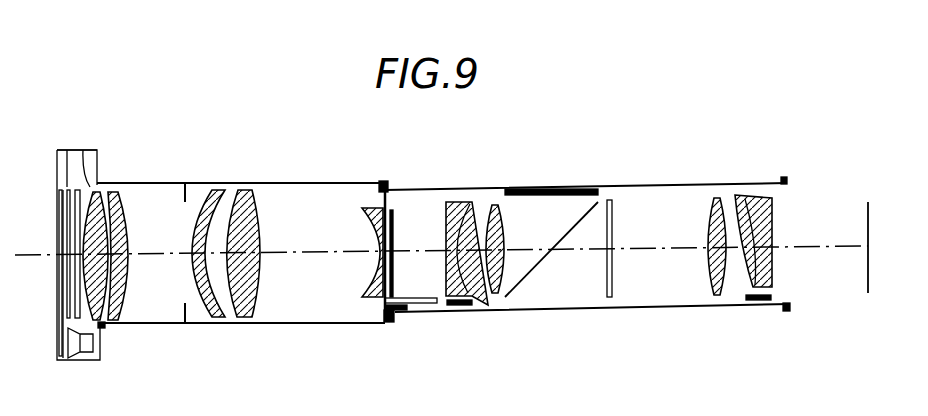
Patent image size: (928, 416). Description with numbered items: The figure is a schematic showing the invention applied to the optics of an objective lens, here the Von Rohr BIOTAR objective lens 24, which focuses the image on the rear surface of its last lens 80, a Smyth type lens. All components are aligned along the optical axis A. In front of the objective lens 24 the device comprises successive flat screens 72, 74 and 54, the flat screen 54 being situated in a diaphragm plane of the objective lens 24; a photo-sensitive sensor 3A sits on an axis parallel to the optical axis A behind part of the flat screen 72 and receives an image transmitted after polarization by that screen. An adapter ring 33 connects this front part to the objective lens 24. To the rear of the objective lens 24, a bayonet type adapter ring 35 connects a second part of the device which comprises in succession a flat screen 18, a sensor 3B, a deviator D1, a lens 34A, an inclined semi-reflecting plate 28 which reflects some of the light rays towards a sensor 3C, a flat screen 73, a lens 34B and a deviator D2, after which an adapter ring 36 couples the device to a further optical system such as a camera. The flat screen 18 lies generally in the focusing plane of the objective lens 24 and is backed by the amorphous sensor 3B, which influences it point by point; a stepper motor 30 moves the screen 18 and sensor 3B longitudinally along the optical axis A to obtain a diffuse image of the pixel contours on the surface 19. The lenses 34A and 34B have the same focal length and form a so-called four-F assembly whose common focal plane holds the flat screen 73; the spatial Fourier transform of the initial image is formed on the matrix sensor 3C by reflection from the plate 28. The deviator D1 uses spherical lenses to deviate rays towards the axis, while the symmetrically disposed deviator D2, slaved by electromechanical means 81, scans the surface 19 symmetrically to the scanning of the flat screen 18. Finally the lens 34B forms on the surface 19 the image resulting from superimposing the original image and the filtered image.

The optical axis A is at (32, 255).
The flat screen 72 is at (56, 192).
The flat screen 74 is at (67, 139).
The flat screen 54 is at (91, 139).
The photo-sensitive sensor 3A is at (80, 345).
The adapter ring 33 is at (97, 184).
The objective lens 24 is at (377, 207).
The last lens 80 is at (372, 290).
The adapter ring 35 is at (387, 183).
The adapter ring 36 is at (787, 181).
The sensor 3B is at (394, 212).
The stepper motor 30 is at (420, 298).
The flat screen 18 is at (404, 310).
The stepper motor 81 is at (470, 305).
The deviator D1 is at (472, 216).
The lens 34A is at (503, 231).
The plate 28 is at (537, 266).
The sensor 3C is at (598, 189).
The flat screen 73 is at (613, 280).
The lens 34B is at (716, 276).
The deviator D2 is at (752, 270).
The surface 19 is at (868, 277).